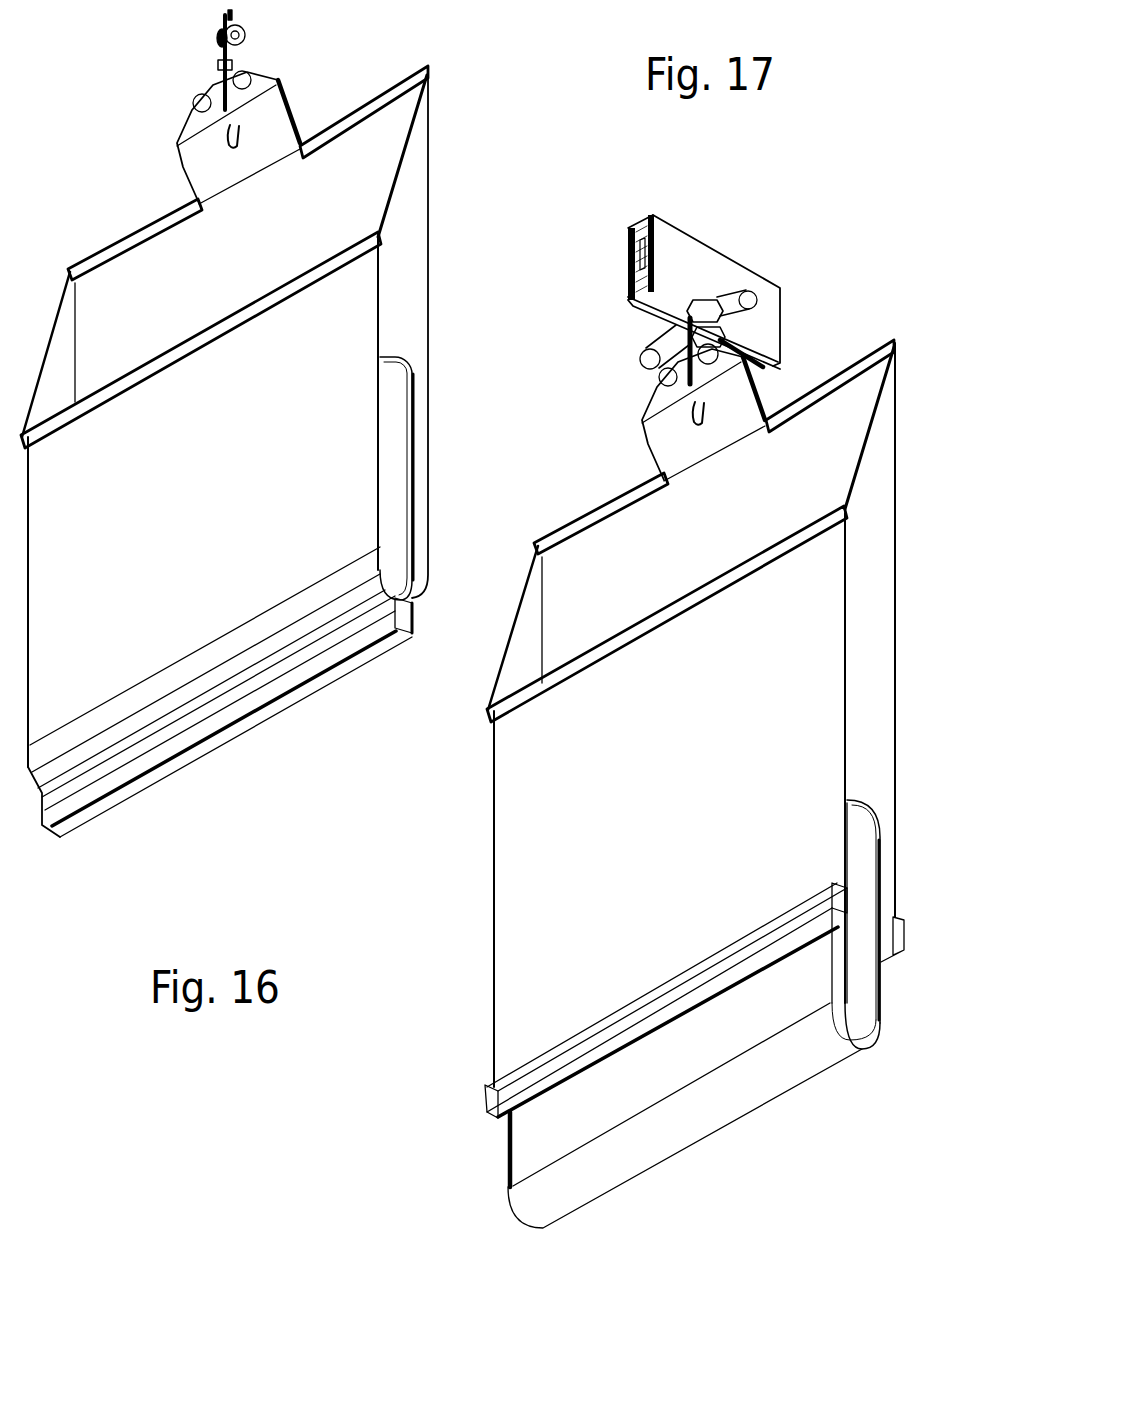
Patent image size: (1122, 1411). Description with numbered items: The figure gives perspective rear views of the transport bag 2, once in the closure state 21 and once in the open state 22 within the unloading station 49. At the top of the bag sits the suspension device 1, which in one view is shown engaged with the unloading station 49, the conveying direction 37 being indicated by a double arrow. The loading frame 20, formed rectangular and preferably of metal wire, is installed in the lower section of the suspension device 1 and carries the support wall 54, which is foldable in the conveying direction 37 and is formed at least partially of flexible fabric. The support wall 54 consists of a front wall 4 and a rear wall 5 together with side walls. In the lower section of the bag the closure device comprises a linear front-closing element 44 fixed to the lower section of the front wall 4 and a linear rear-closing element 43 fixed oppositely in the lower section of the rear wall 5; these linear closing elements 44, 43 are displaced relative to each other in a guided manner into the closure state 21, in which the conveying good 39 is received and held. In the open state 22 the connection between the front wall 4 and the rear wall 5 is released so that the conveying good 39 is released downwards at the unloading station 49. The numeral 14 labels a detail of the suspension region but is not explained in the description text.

In FIG. 16, the suspension device 1 is at (163, 115).
In FIG. 17, the suspension device 1 is at (623, 398).
In FIG. 16, the transport bag 2 is at (153, 273).
In FIG. 17, the transport bag 2 is at (632, 545).
In FIG. 16, the front wall 4 is at (400, 232).
In FIG. 17, the front wall 4 is at (582, 580).
In FIG. 16, the rear wall 5 is at (333, 337).
In FIG. 17, the rear wall 5 is at (553, 847).
In FIG. 16, the suspension fitting 14 is at (244, 53).
In FIG. 16, the loading frame 20 is at (430, 113).
In FIG. 17, the loading frame 20 is at (503, 647).
In FIG. 16, the closure state 21 is at (280, 724).
In FIG. 17, the open state 22 is at (494, 1140).
In FIG. 17, the conveying direction 37 is at (765, 257).
In FIG. 16, the conveying good 39 is at (390, 447).
In FIG. 17, the conveying good 39 is at (670, 1133).
In FIG. 16, the linear rear-closing element 43 is at (242, 702).
In FIG. 17, the linear rear-closing element 43 is at (710, 973).
In FIG. 16, the linear front-closing element 44 is at (303, 700).
In FIG. 17, the linear front-closing element 44 is at (889, 960).
In FIG. 17, the unloading station 49 is at (643, 326).
In FIG. 16, the support wall 54 is at (408, 266).
In FIG. 17, the support wall 54 is at (869, 428).